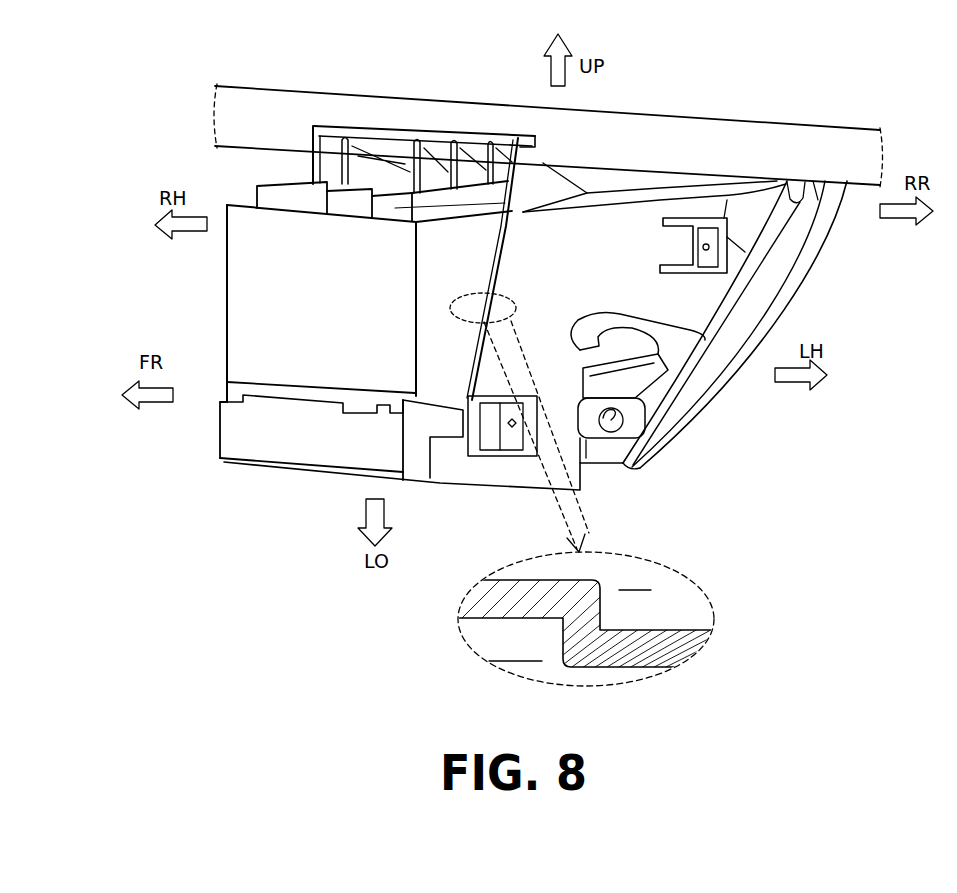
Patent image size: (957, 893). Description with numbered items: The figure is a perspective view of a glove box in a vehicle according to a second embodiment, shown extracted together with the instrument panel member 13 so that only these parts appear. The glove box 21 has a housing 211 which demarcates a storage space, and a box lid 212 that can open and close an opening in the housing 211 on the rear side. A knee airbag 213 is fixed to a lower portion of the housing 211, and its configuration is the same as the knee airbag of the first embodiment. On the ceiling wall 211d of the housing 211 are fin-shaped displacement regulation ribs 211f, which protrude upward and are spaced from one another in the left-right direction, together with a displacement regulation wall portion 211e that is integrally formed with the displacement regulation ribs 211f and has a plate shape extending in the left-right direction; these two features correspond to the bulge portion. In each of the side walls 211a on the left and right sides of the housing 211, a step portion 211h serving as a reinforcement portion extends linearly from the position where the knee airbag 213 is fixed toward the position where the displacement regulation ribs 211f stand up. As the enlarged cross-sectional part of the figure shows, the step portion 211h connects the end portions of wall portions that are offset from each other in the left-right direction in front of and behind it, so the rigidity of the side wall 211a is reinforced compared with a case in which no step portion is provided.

The instrument panel member 13 is at (771, 128).
The glove box 21 is at (823, 254).
The housing 211 is at (250, 262).
The side wall 211a is at (597, 287).
The ceiling wall 211d is at (587, 193).
The displacement regulation wall portion 211e is at (335, 130).
The displacement regulation ribs 211f is at (378, 146).
The step portion 211h is at (583, 672).
The box lid 212 is at (694, 402).
The knee airbag 213 is at (278, 472).